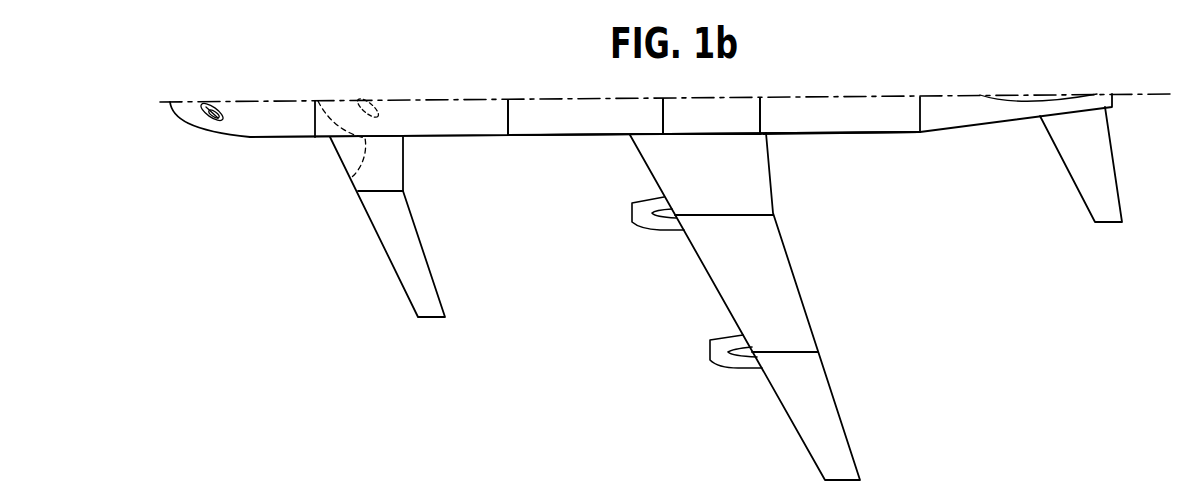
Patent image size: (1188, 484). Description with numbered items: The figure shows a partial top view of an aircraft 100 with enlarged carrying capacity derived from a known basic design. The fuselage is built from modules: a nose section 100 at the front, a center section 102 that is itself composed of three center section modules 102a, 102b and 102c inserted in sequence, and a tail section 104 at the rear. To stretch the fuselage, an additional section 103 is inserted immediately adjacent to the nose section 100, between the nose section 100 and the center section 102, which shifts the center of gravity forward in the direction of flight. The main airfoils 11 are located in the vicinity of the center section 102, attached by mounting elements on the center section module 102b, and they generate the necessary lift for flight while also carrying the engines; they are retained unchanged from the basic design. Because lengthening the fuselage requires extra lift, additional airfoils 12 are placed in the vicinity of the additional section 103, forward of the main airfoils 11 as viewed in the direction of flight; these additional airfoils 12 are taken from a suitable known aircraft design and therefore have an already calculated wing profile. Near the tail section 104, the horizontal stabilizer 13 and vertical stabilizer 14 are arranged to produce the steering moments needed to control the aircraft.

The nose section 100 is at (225, 136).
The additional section 103 is at (322, 138).
The center section 102 is at (555, 137).
The center section module 102a is at (590, 130).
The center section module 102b is at (745, 125).
The center section module 102c is at (889, 120).
The tail section 104 is at (927, 128).
The vertical stabilizer 14 is at (1013, 99).
The horizontal stabilizer 13 is at (1108, 165).
The additional airfoils 12 is at (415, 249).
The airfoils 11 is at (790, 287).